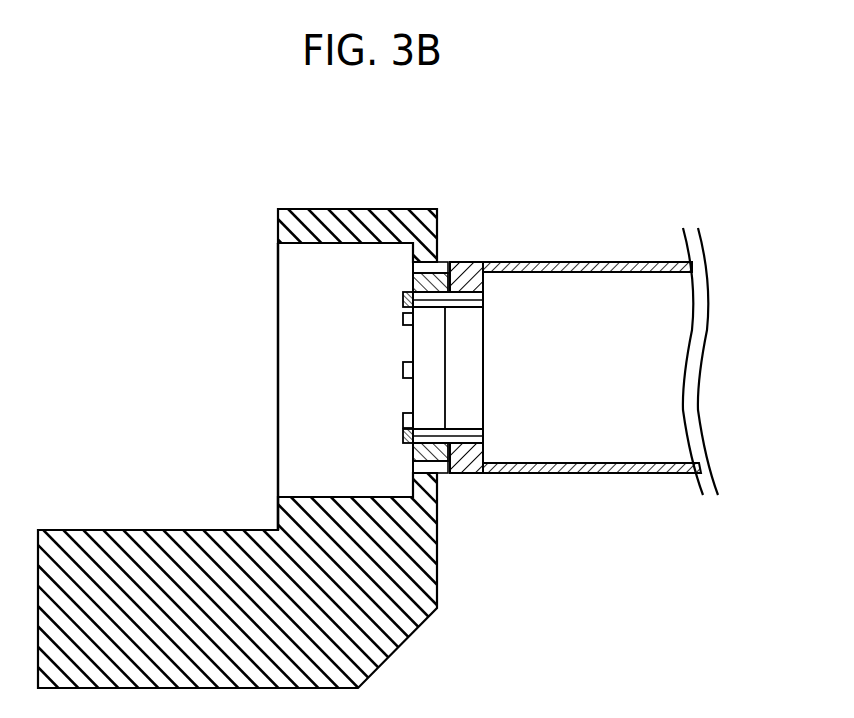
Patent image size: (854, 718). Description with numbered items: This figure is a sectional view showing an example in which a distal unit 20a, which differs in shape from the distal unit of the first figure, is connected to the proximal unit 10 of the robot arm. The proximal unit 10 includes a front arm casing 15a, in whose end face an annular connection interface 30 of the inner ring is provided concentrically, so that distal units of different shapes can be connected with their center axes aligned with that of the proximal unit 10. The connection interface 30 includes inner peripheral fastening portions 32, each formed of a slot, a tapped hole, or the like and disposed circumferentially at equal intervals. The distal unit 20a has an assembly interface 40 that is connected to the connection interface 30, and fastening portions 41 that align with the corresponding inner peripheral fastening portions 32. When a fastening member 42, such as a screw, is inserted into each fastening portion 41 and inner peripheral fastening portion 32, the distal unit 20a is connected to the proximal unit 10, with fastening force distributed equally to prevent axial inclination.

The proximal unit 10 is at (334, 191).
The front arm casing 15a is at (278, 226).
The distal unit 20a is at (632, 200).
The connection interface 30 is at (458, 290).
The assembly interface 40 is at (445, 282).
The fastening portions 41 is at (483, 301).
The inner peripheral fastening portions 32 is at (436, 310).
The fastening member 42 is at (402, 438).